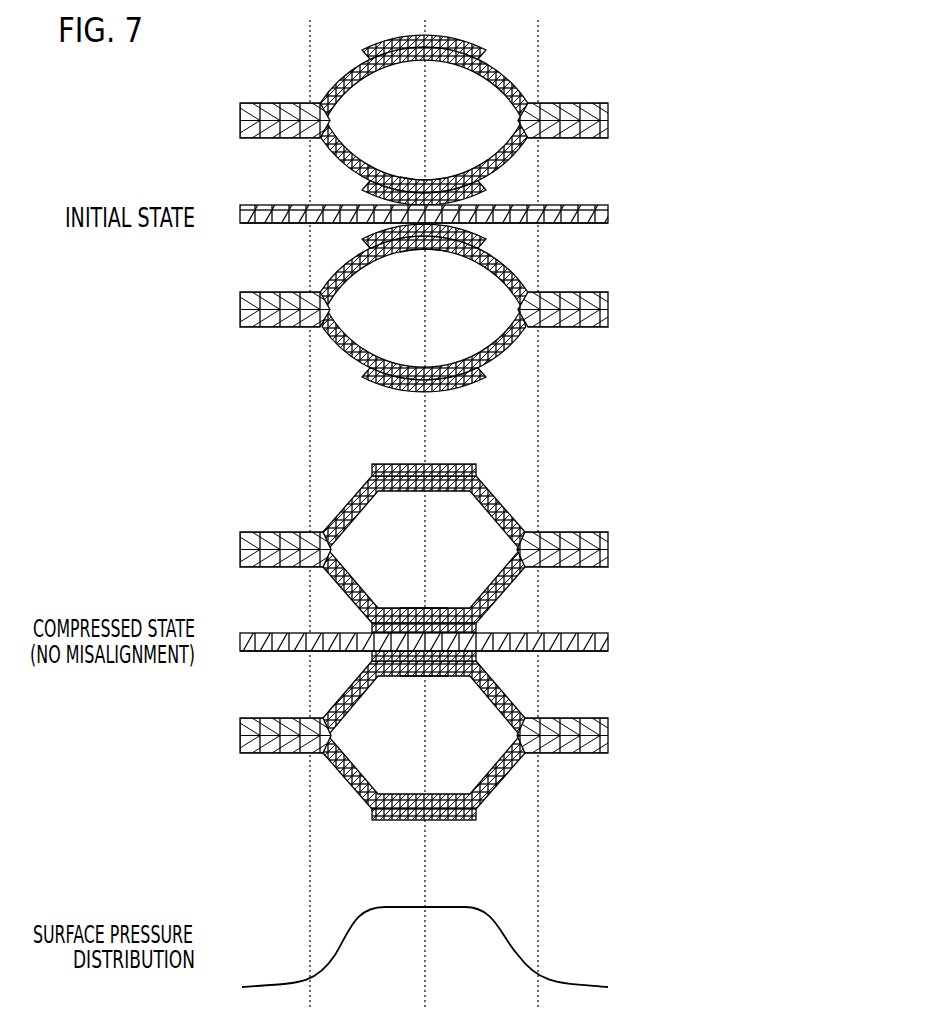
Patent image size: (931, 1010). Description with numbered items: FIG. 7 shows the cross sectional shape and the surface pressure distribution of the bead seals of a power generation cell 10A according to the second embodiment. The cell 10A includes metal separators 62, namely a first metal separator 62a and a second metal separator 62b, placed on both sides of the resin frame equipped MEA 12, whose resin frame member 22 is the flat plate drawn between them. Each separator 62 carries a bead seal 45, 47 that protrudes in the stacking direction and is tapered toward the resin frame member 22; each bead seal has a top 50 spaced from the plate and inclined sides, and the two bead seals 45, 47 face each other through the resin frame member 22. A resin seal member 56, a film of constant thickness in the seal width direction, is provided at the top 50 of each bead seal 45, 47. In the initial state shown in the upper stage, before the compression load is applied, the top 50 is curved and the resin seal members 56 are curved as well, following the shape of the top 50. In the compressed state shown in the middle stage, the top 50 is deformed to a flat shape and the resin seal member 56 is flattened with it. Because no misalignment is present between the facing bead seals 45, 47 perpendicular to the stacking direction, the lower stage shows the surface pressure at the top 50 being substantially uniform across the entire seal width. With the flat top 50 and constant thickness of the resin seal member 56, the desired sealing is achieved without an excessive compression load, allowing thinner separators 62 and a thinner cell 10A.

The power generation cell 10A is at (421, 427).
The resin frame equipped MEA 12 is at (424, 406).
The resin frame member 22 is at (424, 454).
The bead seal 45 is at (423, 337).
The bead seal 47 is at (423, 522).
The top 50 is at (431, 429).
The resin seal member 56 is at (404, 427).
The metal separator 62 is at (450, 428).
The first metal separator 62a is at (424, 335).
The second metal separator 62b is at (424, 522).